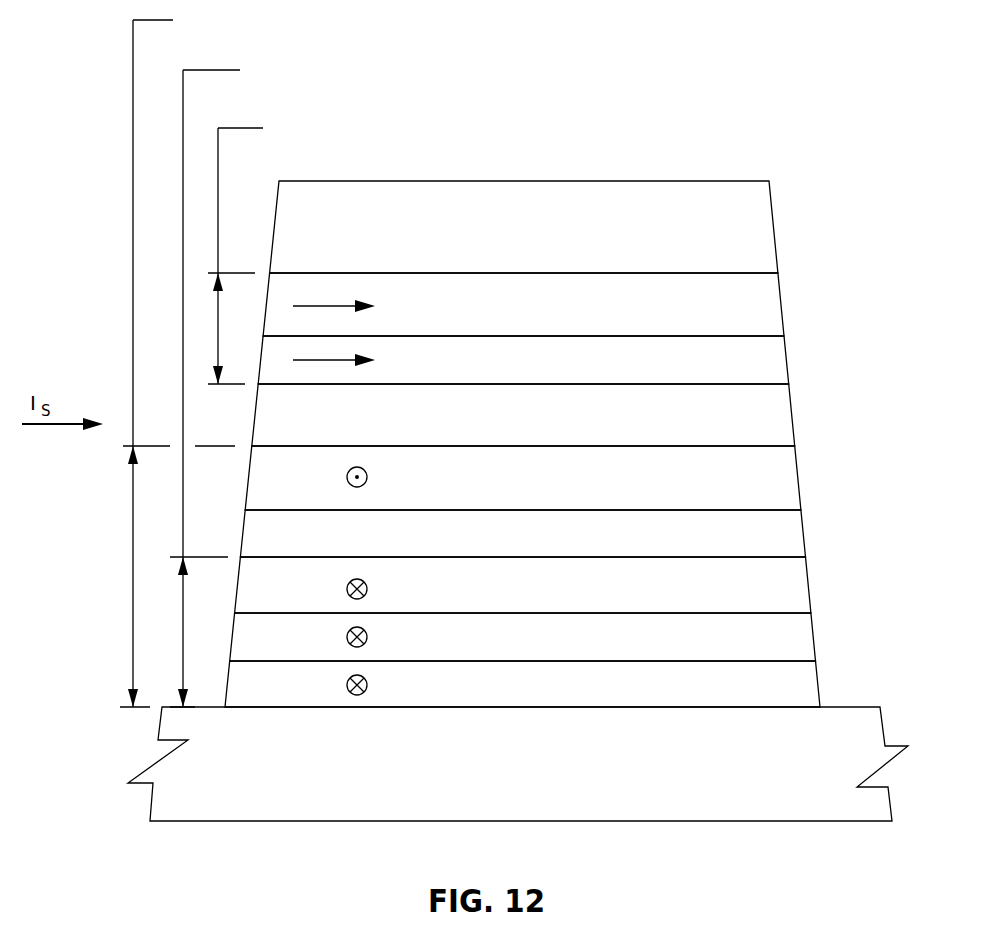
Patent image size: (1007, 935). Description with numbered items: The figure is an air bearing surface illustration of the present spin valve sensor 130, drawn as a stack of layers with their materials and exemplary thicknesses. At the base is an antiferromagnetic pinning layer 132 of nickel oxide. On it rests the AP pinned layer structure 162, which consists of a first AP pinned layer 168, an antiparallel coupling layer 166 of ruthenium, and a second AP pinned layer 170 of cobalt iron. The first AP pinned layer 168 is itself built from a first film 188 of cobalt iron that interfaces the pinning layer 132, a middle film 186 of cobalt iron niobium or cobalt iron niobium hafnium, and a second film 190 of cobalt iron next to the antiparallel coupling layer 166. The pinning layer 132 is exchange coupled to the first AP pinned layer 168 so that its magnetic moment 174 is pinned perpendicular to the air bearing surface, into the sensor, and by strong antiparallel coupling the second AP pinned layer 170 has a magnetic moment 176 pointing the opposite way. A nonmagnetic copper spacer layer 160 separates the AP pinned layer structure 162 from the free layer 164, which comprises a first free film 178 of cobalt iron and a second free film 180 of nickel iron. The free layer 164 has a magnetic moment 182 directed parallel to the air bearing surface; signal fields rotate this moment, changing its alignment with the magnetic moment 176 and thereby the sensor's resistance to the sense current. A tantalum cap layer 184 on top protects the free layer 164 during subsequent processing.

The spin valve sensor 130 is at (684, 136).
The antiferromagnetic pinning layer 132 is at (800, 813).
The spacer layer 160 is at (791, 410).
The AP pinned layer structure 162 is at (335, 357).
The free layer 164 is at (324, 251).
The antiparallel coupling layer 166 is at (803, 527).
The first AP pinned layer 168 is at (255, 383).
The second AP pinned layer 170 is at (796, 463).
The magnetic moment of first AP pinned layer 174 is at (346, 589).
The magnetic moment of second AP pinned layer 176 is at (346, 477).
The first free film 178 is at (786, 355).
The second free film 180 is at (780, 298).
The magnetic moment of free layer 182 is at (312, 305).
The cap layer 184 is at (773, 226).
The middle film 186 is at (813, 635).
The first film 188 is at (818, 683).
The second film 190 is at (808, 583).